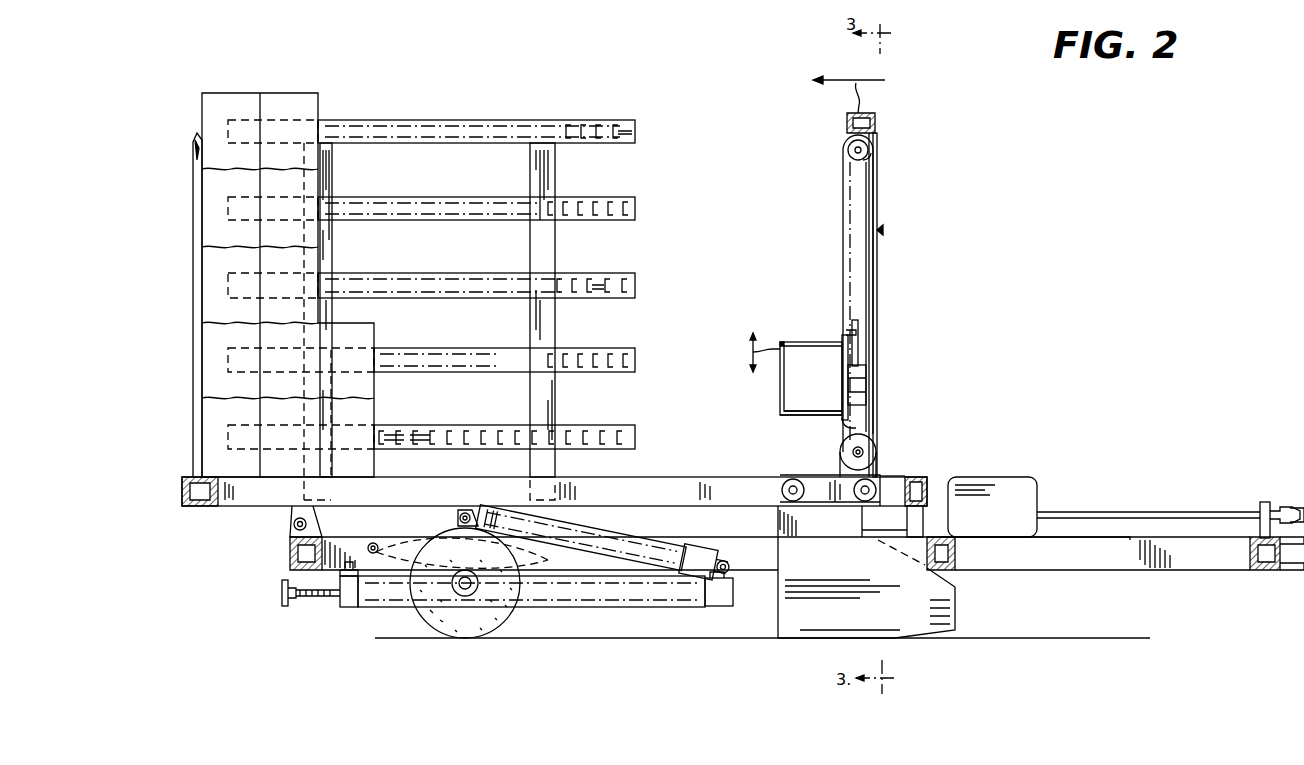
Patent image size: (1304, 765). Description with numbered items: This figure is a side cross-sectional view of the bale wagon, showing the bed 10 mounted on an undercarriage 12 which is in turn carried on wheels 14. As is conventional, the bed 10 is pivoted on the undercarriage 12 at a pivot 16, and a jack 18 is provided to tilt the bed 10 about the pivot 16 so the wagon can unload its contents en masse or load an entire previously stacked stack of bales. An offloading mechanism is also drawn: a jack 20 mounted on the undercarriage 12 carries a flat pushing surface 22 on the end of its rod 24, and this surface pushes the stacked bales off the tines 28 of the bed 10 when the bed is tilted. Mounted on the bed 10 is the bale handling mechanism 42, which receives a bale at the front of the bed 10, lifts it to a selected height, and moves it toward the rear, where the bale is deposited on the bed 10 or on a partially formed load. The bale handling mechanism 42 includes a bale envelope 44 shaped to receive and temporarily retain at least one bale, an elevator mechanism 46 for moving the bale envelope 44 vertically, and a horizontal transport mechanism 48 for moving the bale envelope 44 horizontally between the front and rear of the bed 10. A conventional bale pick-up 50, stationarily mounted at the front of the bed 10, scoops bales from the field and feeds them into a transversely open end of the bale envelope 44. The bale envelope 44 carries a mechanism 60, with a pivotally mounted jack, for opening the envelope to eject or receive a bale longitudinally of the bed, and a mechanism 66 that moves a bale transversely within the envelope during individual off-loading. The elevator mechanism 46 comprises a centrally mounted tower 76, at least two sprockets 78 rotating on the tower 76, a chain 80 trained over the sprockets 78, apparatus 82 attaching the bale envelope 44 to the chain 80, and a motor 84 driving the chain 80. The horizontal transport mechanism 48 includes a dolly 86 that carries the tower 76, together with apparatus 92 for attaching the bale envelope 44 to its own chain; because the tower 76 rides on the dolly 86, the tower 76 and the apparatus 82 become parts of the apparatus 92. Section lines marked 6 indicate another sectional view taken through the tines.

The section line 6- 6 is at (430, 210).
The bed 10 is at (668, 477).
The undercarriage 12 is at (745, 570).
The wheels 14 is at (514, 610).
The pivot 16 is at (294, 524).
The jack 18 is at (669, 535).
The jack 20 is at (655, 606).
The flat pushing surface 22 is at (282, 600).
The rod 24 is at (314, 598).
The tines 28 is at (197, 292).
The bale handling mechanism 42 is at (883, 238).
The bale envelope 44 is at (820, 340).
The elevator mechanism 46 is at (878, 190).
The horizontal transport mechanism 48 is at (824, 506).
The bale pick-up 50 is at (950, 588).
The mechanism for opening the bale envelope 60 is at (866, 385).
The mechanism for moving a bale transversely 66 is at (832, 412).
The tower 76 is at (876, 113).
The sprockets 78 is at (869, 162).
The chain 80 is at (844, 217).
The apparatus attaching the bale envelope to the chain 82 is at (852, 420).
The motor 84 is at (876, 455).
The dolly 86 is at (782, 479).
The apparatus for attaching the bale envelope to the chain 92 is at (880, 478).